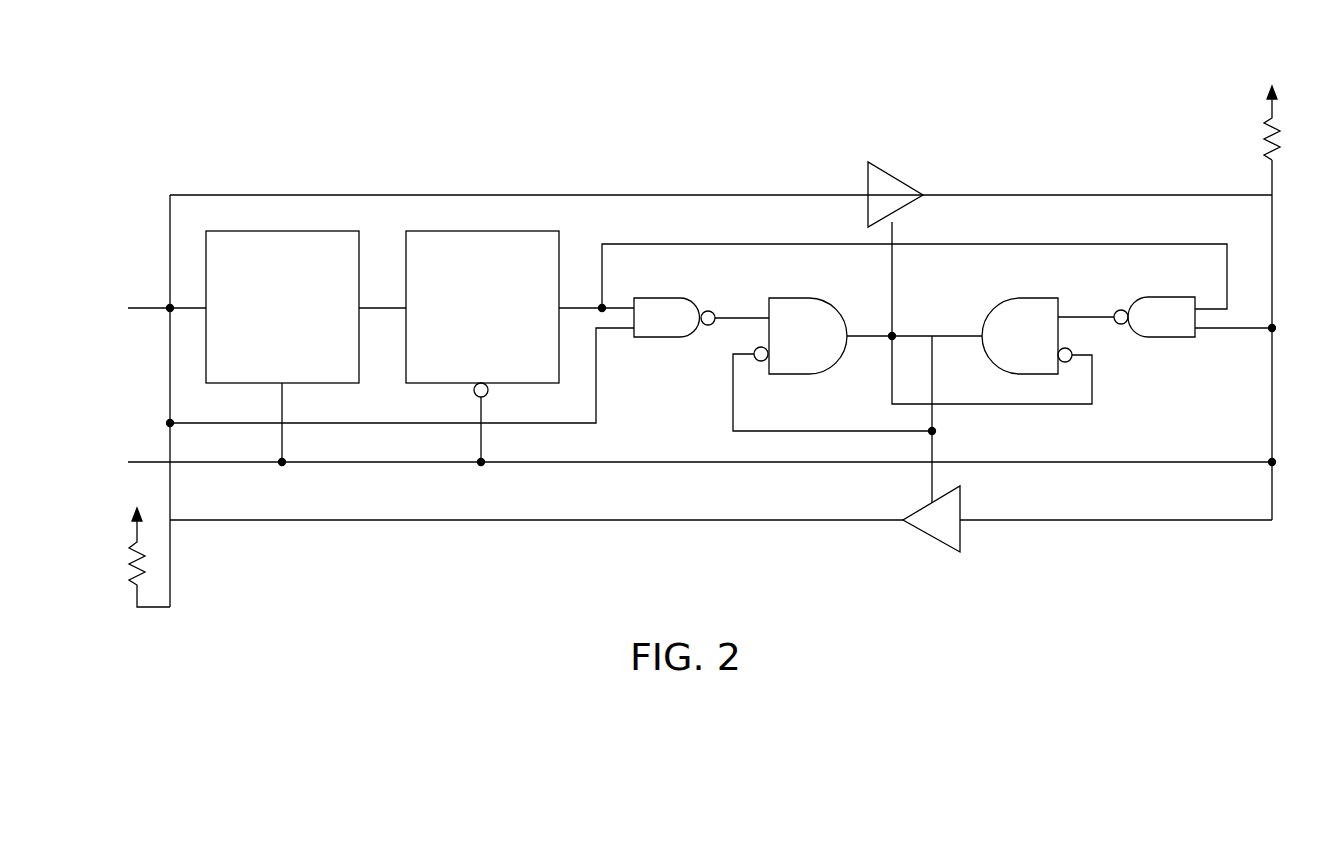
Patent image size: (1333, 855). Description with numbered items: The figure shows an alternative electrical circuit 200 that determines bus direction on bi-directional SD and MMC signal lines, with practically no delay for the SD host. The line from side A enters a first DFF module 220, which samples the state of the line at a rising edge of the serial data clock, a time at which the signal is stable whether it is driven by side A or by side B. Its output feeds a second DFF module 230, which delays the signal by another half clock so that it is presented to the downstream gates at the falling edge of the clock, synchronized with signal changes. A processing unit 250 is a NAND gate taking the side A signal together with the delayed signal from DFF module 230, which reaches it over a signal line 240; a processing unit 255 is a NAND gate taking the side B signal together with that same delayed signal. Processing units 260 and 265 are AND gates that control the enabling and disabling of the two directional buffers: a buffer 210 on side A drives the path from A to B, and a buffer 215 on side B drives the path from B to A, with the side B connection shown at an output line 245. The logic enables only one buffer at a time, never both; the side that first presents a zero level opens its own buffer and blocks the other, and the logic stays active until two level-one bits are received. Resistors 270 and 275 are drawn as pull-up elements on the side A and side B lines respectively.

The electrical circuit 200 is at (663, 383).
The buffer 210 is at (898, 175).
The buffer 215 is at (928, 537).
The DFF module 220 is at (287, 232).
The DFF module 230 is at (487, 232).
The signal line 240 is at (597, 400).
The output line 245 is at (1237, 331).
The processing unit 250 is at (652, 296).
The processing unit 255 is at (1172, 297).
The processing unit 260 is at (779, 297).
The processing unit 265 is at (1035, 297).
The resistor 270 is at (130, 563).
The resistor 275 is at (1281, 124).